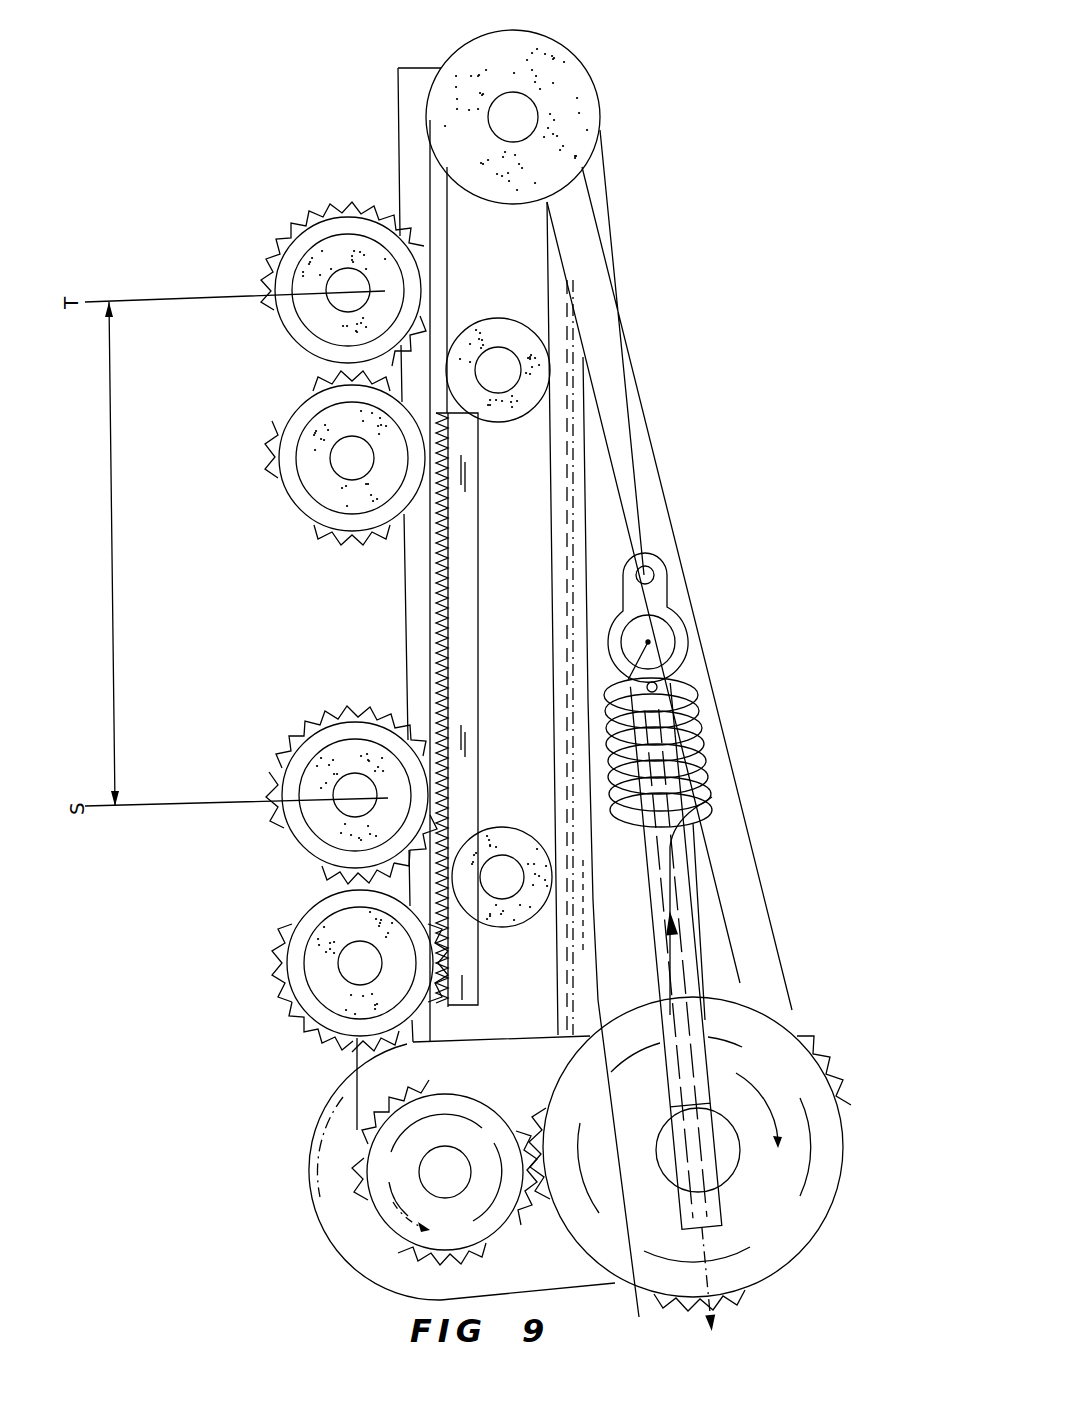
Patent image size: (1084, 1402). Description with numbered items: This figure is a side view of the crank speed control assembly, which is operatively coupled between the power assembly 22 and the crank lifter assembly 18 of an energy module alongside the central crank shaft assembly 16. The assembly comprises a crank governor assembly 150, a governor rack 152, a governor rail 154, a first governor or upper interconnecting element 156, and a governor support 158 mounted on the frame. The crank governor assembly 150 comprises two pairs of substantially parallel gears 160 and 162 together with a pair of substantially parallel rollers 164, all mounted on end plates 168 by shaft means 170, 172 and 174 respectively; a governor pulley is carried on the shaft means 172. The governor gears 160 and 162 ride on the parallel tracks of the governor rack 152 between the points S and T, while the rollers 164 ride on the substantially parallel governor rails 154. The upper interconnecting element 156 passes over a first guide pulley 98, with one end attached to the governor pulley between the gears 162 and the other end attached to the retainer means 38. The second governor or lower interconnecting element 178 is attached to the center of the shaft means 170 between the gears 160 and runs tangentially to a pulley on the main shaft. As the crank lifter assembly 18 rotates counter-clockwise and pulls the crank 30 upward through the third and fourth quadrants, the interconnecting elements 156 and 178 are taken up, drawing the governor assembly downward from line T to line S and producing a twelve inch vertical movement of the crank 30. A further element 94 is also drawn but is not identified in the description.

The central crank shaft assembly 16 is at (852, 1134).
The crank lifter assembly 18 is at (363, 1199).
The power assembly 22 is at (675, 955).
The crank 30 is at (703, 890).
The retainer means 38 is at (678, 615).
The drive belt 94 is at (610, 180).
The first guide pulley 98 is at (597, 83).
The crank governor assembly 150 is at (303, 887).
The governor rack 152 is at (440, 525).
The governor rail 154 is at (565, 390).
The first governor or upper interconnecting element 156 is at (430, 207).
The governor support 158 is at (415, 150).
The substantially parallel gears 160 is at (320, 1043).
The substantially parallel gears 162 is at (280, 832).
The rollers 164 is at (513, 927).
The end plates 168 is at (468, 740).
The shaft means 170 is at (355, 962).
The shaft means 172 is at (350, 795).
The shaft means 174 is at (505, 867).
The second governor or lower interconnecting element 178 is at (363, 1130).